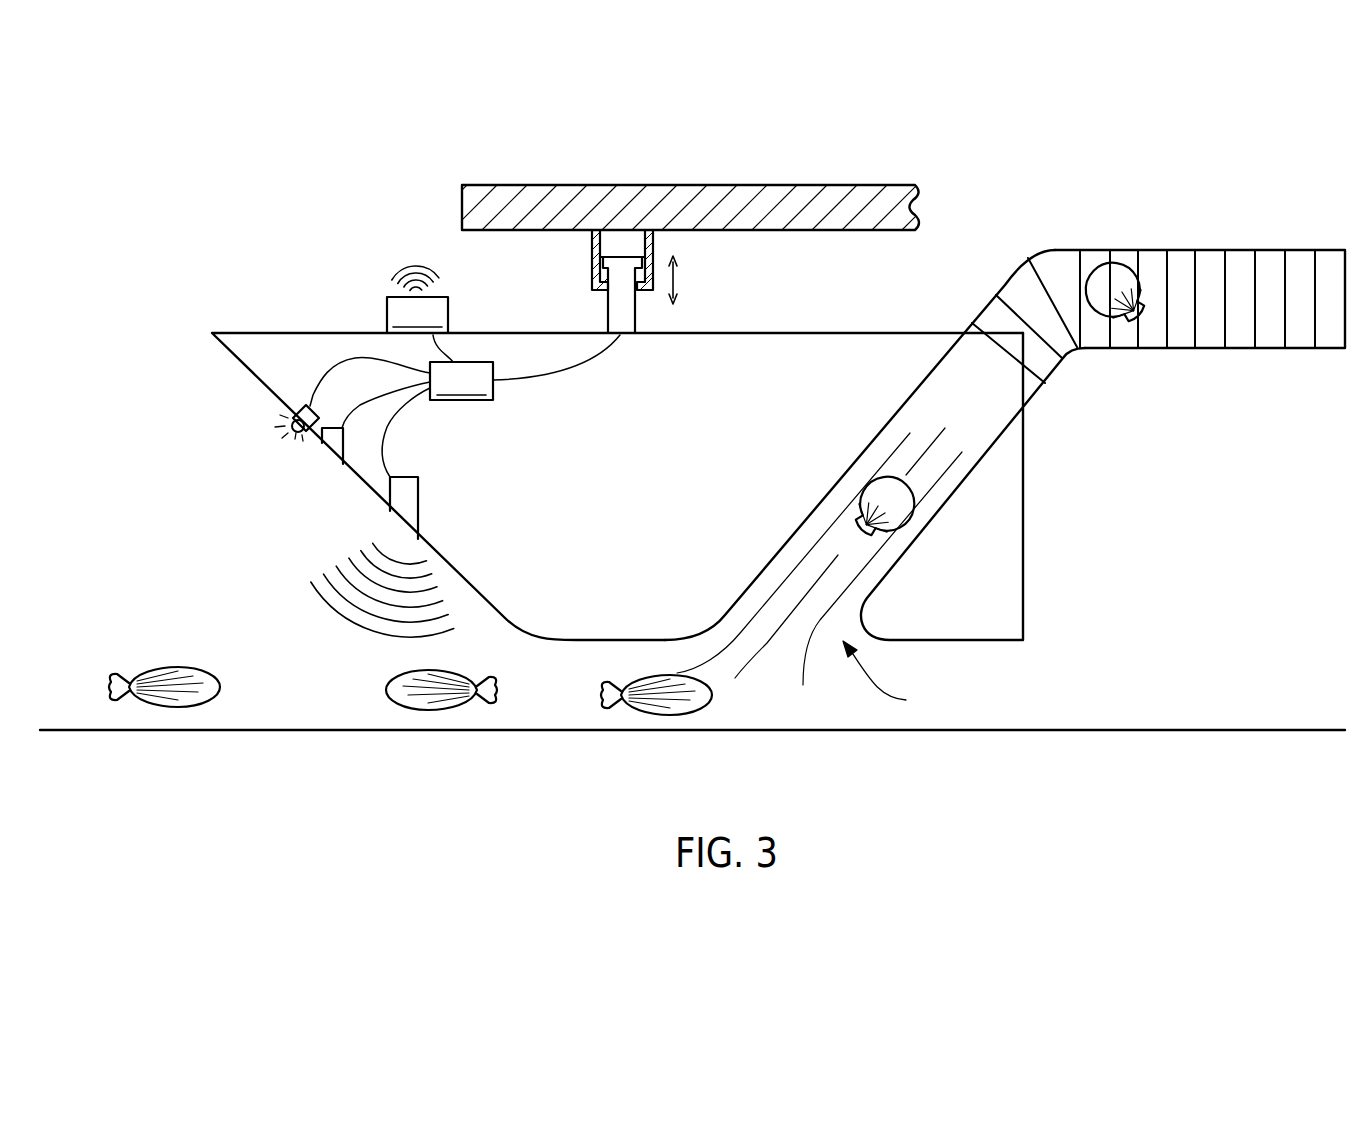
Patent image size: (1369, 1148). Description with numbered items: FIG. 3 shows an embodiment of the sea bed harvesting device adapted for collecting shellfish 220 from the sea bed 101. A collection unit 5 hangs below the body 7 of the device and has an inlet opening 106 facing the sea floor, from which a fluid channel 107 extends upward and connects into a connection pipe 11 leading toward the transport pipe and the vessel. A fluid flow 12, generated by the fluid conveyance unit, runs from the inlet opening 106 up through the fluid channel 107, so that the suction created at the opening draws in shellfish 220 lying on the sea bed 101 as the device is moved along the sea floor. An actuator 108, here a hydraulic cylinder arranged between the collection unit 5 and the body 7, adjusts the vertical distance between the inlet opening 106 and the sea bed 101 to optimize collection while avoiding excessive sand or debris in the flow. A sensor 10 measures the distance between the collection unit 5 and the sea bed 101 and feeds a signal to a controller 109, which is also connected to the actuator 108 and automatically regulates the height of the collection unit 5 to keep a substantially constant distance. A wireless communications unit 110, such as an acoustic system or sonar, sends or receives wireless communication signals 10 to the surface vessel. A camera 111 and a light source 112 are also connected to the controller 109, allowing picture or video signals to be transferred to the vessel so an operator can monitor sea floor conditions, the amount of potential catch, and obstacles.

The collection unit 5 is at (325, 333).
The body 7 is at (740, 185).
The sensor 10 is at (403, 267).
The connection pipe 11 is at (1017, 262).
The fluid flow 12 is at (800, 610).
The sea bed 101 is at (1180, 730).
The inlet opening 106 is at (900, 679).
The fluid channel 107 is at (977, 417).
The actuator 108 is at (592, 265).
The controller 109 is at (465, 406).
The wireless communications unit 110 is at (417, 315).
The camera 111 is at (328, 425).
The light source 112 is at (305, 407).
The shellfish 220 is at (180, 707).